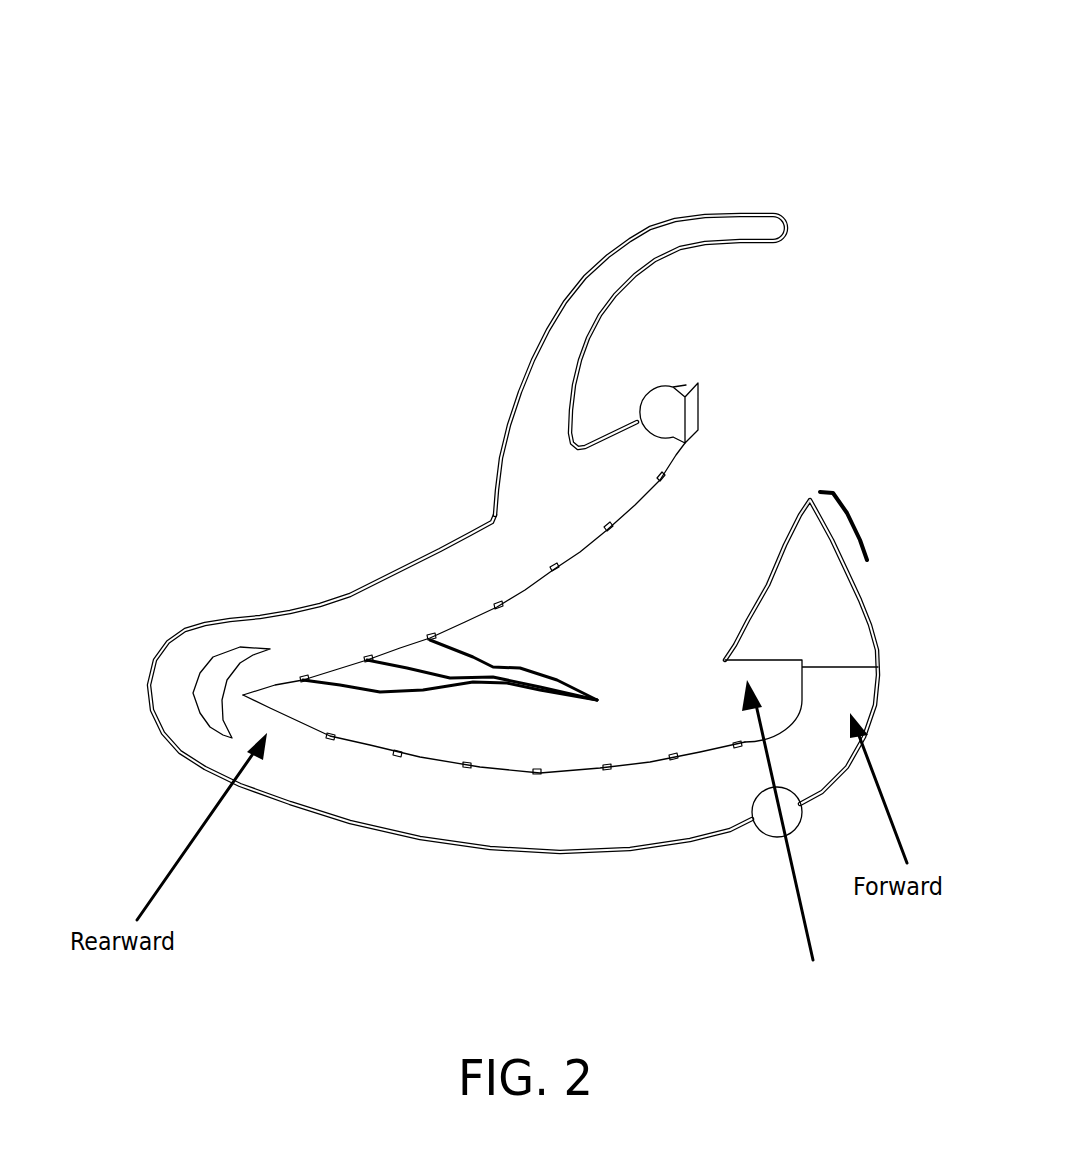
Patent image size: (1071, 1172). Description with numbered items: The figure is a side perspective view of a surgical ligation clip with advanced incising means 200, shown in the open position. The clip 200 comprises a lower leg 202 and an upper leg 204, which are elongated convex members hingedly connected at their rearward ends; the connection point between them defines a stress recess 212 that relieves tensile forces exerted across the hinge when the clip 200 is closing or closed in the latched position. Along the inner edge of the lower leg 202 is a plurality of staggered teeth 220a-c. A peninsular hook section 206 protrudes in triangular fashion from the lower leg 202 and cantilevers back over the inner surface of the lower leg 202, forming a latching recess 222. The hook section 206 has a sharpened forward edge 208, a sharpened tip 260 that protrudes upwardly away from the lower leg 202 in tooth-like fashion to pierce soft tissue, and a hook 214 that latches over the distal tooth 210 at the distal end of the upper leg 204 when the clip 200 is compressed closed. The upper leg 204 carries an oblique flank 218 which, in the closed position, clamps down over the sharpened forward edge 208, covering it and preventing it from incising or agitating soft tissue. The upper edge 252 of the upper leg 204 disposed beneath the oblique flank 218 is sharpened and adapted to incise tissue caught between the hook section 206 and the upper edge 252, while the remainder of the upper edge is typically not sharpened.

The surgical ligation clip with advanced incising means 200 is at (500, 502).
The lower leg 202 is at (560, 821).
The upper leg 204 is at (467, 599).
The hook section 206 is at (890, 662).
The sharpened forward edge 208 is at (852, 593).
The distal tooth 210 is at (698, 420).
The stress recess 212 is at (212, 667).
The hook 214 is at (760, 635).
The oblique flank 218 is at (637, 245).
The staggered teeth 220a-c is at (491, 679).
The latching recess 222 is at (789, 839).
The upper edge 252 is at (622, 420).
The sharpened tip 260 is at (810, 500).